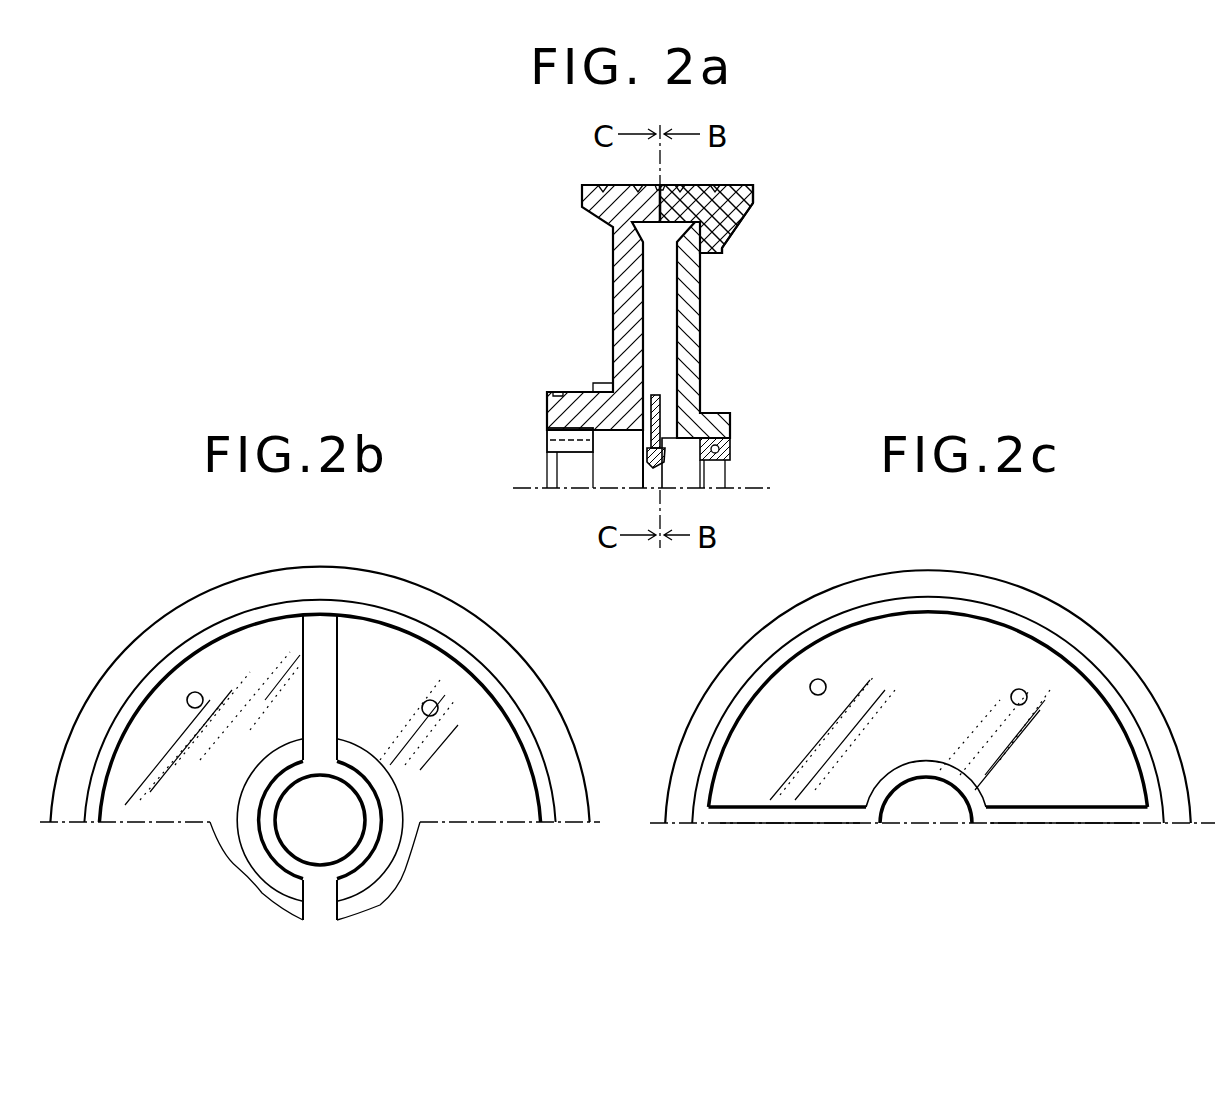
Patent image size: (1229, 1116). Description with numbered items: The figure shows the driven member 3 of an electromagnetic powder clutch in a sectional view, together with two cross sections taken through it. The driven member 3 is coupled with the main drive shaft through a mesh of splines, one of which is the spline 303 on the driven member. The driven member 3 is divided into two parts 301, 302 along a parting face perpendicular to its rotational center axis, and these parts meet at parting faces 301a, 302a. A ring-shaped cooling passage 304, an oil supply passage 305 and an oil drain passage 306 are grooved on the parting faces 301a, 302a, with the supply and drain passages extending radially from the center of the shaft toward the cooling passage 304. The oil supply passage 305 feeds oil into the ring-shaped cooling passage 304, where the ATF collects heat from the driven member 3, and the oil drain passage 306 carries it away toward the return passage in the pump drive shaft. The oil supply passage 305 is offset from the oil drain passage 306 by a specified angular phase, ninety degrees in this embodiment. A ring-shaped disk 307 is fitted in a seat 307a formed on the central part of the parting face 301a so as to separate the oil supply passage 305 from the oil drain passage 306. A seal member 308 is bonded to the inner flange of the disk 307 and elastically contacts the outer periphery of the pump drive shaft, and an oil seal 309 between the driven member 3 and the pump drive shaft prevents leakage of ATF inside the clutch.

In FIG. 2a, the driven member 3 is at (565, 167).
In FIG. 2a, the part 301 is at (572, 220).
In FIG. 2b, the part 301 is at (178, 581).
In FIG. 2a, the part 302 is at (763, 217).
In FIG. 2c, the part 302 is at (1116, 615).
In FIG. 2a, the spline 303 is at (607, 452).
In FIG. 2a, the ring-shaped cooling passage 304 is at (728, 182).
In FIG. 2b, the ring-shaped cooling passage 304 is at (378, 608).
In FIG. 2c, the ring-shaped cooling passage 304 is at (1010, 617).
In FIG. 2a, the oil supply passage 305 is at (643, 313).
In FIG. 2b, the oil supply passage 305 is at (317, 643).
In FIG. 2a, the oil drain passage 306 is at (667, 300).
In FIG. 2c, the oil drain passage 306 is at (822, 823).
In FIG. 2a, the ring-shaped disk 307 is at (647, 408).
In FIG. 2a, the seal member 308 is at (646, 453).
In FIG. 2a, the oil seal 309 is at (733, 447).
In FIG. 2b, the parting face 301a is at (448, 673).
In FIG. 2c, the parting face 302a is at (850, 640).
In FIG. 2b, the seat 307a is at (395, 823).